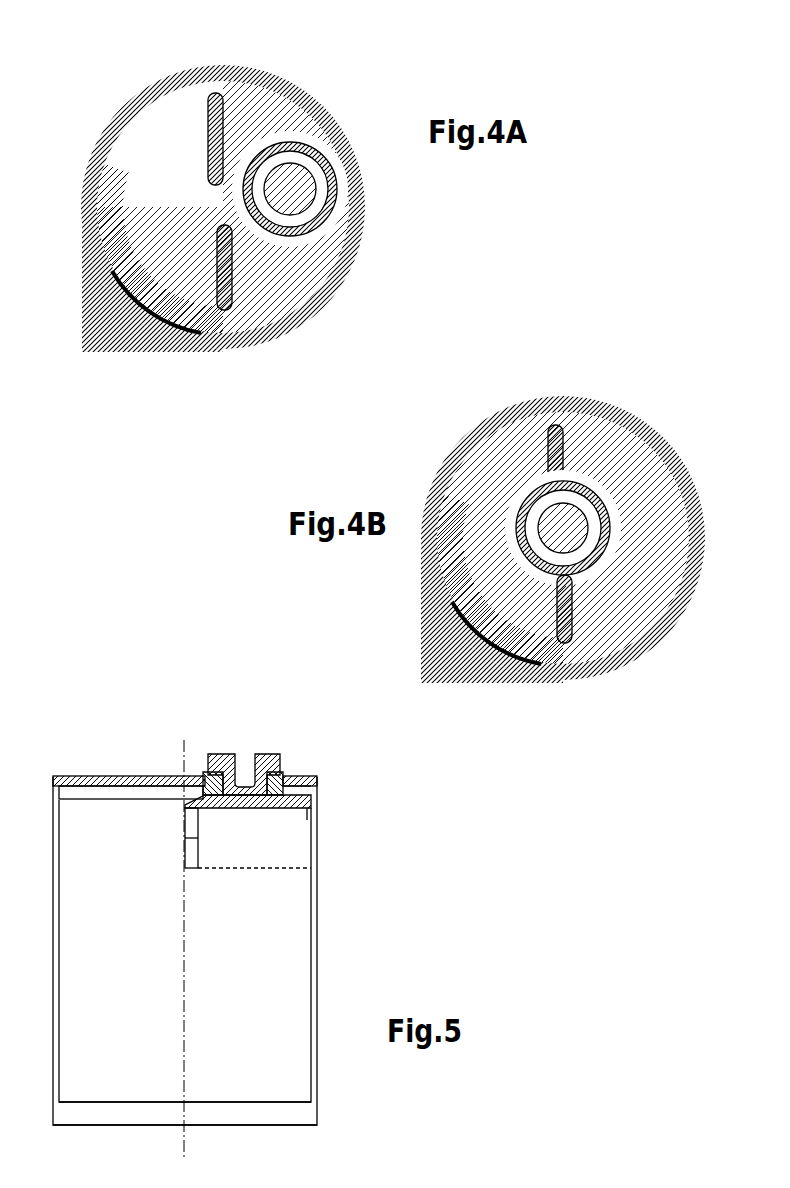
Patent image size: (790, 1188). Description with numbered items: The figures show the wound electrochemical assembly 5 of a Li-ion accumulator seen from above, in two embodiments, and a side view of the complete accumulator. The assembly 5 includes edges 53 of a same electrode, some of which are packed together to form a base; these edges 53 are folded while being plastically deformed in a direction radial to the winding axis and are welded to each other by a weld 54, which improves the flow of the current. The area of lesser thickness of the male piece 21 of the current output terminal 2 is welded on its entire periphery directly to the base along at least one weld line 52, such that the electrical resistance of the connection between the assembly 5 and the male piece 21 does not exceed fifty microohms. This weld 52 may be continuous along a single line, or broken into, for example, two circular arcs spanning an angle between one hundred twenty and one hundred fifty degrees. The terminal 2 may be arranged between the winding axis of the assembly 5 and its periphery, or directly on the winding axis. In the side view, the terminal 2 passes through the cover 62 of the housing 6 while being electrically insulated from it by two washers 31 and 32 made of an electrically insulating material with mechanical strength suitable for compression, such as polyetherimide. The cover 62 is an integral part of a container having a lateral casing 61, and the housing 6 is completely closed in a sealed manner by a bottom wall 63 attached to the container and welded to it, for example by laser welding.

In FIG. 5, the current output terminal 2 is at (240, 756).
In FIG. 4A, the electrochemical assembly 5 is at (230, 327).
In FIG. 4B, the electrochemical assembly 5 is at (573, 655).
In FIG. 5, the electrochemical assembly 5 is at (297, 845).
In FIG. 5, the housing 6 is at (297, 910).
In FIG. 4A, the male piece 21 is at (288, 177).
In FIG. 4B, the male piece 21 is at (577, 527).
In FIG. 5, the washer 31 is at (290, 773).
In FIG. 5, the washer 32 is at (313, 792).
In FIG. 4A, the weld line 52 is at (336, 179).
In FIG. 4B, the weld line 52 is at (608, 508).
In FIG. 4A, the edges 53 is at (130, 236).
In FIG. 4B, the edges 53 is at (472, 570).
In FIG. 4A, the weld 54 is at (220, 117).
In FIG. 4B, the weld 54 is at (560, 445).
In FIG. 5, the lateral casing 61 is at (313, 947).
In FIG. 5, the cover 62 is at (118, 780).
In FIG. 5, the bottom wall 63 is at (300, 1115).